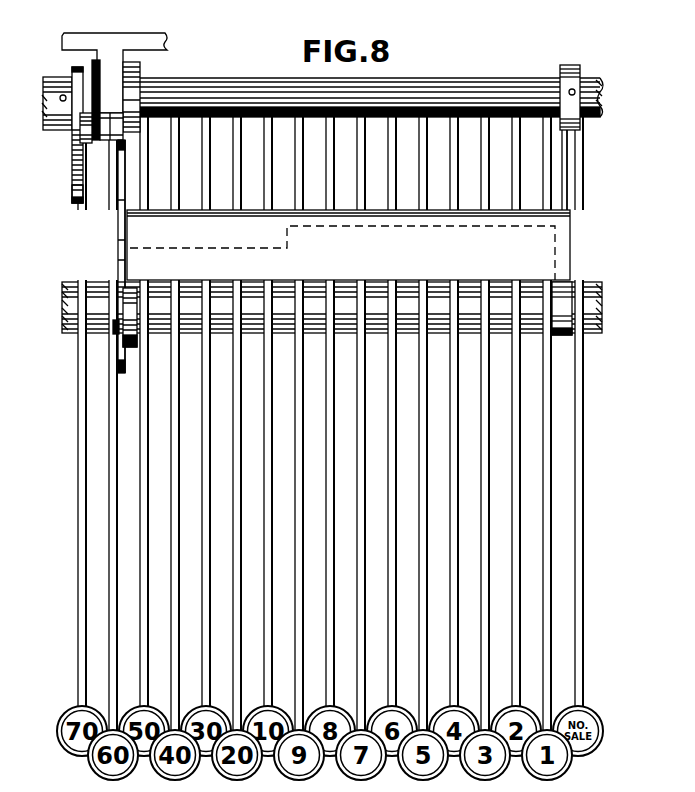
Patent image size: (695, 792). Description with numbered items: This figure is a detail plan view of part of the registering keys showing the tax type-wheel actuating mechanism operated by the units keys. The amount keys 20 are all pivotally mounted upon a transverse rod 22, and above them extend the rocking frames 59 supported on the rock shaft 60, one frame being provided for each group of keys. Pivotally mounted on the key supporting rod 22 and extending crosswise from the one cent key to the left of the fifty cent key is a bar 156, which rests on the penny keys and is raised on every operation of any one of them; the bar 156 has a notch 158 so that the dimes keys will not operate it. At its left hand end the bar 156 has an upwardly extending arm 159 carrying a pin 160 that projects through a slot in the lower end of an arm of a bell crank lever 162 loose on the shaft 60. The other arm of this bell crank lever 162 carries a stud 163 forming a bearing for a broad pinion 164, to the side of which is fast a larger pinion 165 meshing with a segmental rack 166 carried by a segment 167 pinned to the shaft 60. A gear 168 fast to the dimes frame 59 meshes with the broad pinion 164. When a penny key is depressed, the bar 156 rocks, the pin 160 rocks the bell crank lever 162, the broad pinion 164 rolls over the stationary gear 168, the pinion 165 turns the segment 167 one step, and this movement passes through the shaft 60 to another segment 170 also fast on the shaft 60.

The amount keys 20 is at (548, 526).
The transverse rod 22 is at (590, 283).
The rocking frame 59 is at (103, 38).
The rock shaft 60 is at (236, 78).
The bar 156 is at (374, 245).
The notch 158 is at (244, 248).
The arm 159 is at (133, 326).
The pin 160 is at (115, 333).
The bell crank lever 162 is at (122, 176).
The stud 163 is at (110, 132).
The broad pinion 164 is at (88, 130).
The pinion 165 is at (58, 128).
The segmental rack 166 is at (80, 193).
The segment 167 is at (72, 158).
The gear 168 is at (96, 63).
The segment 170 is at (565, 160).